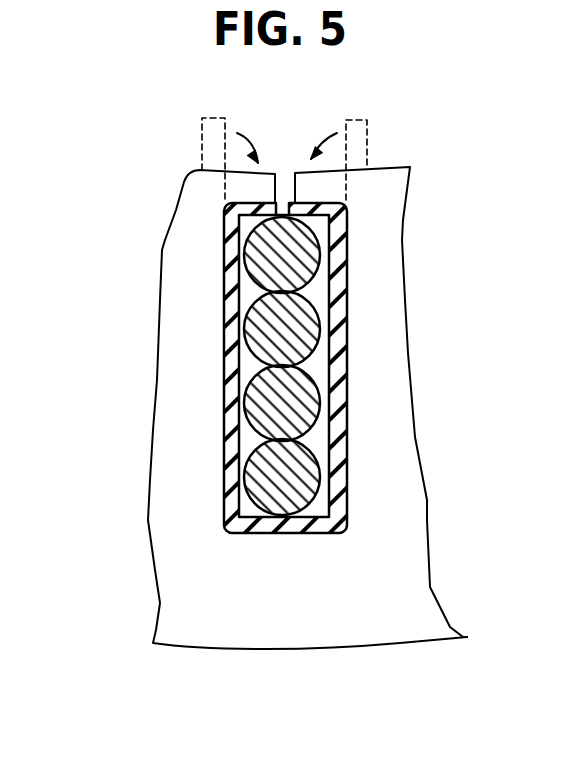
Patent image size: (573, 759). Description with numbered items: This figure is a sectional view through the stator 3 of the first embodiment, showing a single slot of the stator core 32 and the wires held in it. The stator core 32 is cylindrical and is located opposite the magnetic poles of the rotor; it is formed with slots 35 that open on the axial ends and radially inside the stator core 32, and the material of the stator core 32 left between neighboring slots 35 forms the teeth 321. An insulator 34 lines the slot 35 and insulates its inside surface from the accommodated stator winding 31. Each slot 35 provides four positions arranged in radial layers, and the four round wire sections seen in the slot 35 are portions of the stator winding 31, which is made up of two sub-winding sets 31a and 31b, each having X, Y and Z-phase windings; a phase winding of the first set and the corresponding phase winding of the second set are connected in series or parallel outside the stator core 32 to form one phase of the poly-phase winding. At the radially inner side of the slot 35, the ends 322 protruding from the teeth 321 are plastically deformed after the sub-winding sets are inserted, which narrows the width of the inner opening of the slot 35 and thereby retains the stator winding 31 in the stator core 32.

The stator 3 is at (291, 440).
The stator winding 31 is at (297, 400).
The sub-winding set 31a is at (311, 442).
The sub-winding set 31b is at (312, 288).
The stator core 32 is at (250, 618).
The teeth 321 is at (377, 290).
The ends 322 is at (362, 120).
The insulator 34 is at (225, 505).
The slots 35 is at (243, 284).